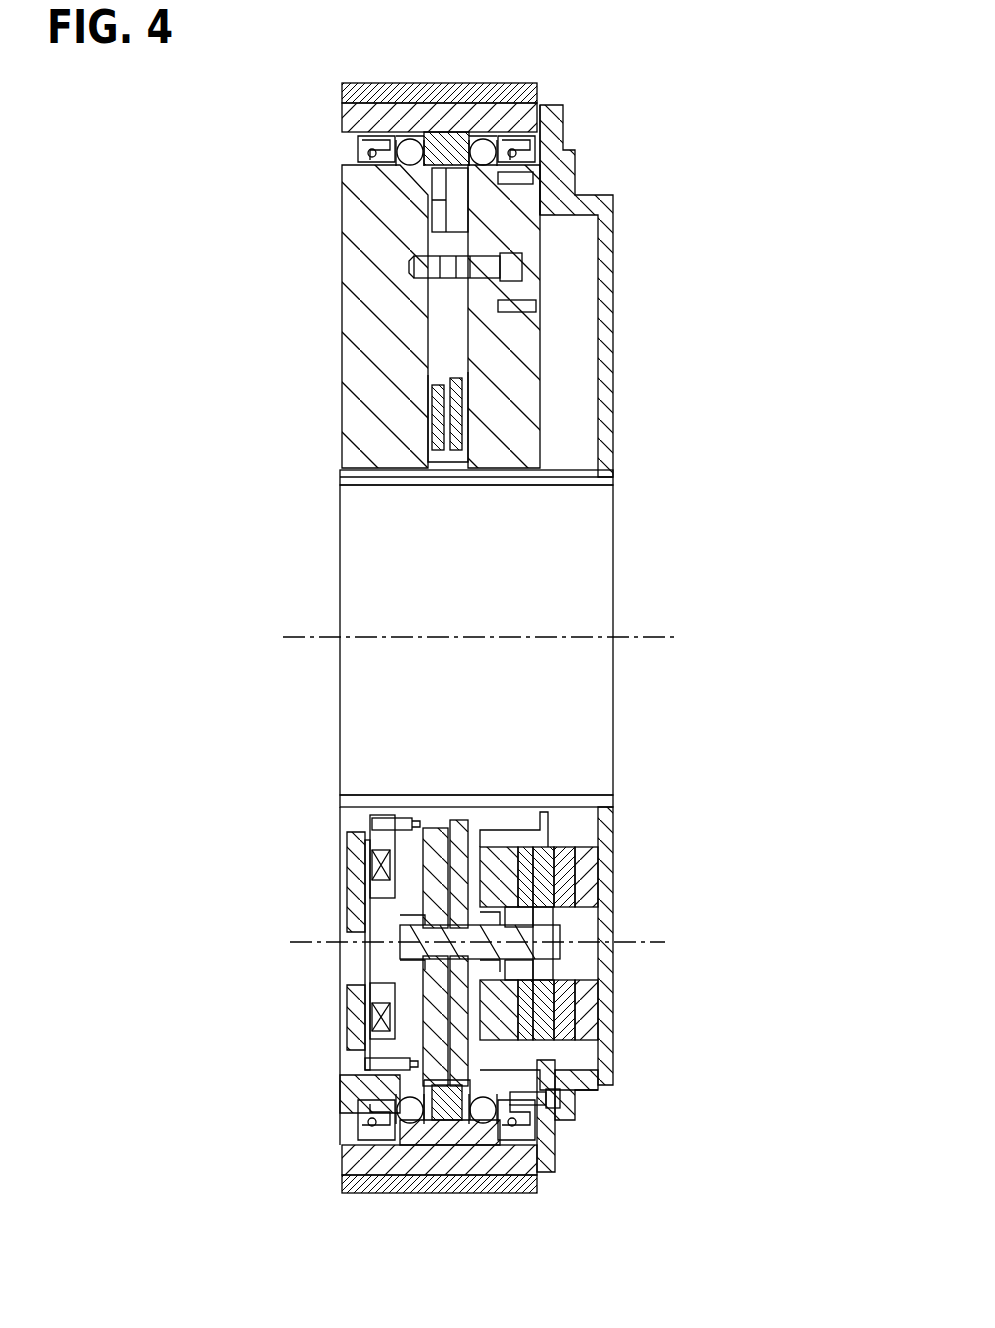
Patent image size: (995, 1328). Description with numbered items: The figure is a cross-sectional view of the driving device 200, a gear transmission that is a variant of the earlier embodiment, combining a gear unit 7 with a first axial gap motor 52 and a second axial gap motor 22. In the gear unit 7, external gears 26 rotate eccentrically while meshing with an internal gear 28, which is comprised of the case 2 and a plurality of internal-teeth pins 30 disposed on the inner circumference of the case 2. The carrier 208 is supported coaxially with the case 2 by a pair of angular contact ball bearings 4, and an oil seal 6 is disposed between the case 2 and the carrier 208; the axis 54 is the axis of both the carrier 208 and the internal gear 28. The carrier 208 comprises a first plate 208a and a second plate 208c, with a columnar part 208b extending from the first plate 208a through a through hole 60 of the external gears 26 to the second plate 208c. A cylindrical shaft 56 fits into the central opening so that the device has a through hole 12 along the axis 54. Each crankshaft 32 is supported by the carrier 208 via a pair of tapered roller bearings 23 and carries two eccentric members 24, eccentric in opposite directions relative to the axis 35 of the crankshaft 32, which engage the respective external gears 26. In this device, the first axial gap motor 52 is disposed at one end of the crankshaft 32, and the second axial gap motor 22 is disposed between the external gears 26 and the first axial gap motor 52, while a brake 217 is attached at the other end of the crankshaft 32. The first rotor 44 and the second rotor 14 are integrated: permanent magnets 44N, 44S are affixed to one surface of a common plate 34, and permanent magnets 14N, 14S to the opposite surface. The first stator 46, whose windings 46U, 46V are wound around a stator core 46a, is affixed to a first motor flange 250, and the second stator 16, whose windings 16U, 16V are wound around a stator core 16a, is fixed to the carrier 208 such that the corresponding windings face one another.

The case 2 is at (450, 100).
The angular contact ball bearings 4 is at (410, 140).
The oil seal 6 is at (370, 140).
The gear unit 7 is at (314, 124).
The through hole 12 is at (305, 518).
The second rotor 14 is at (329, 953).
The permanent magnets 14N is at (423, 905).
The permanent magnets 14S is at (423, 1050).
The second stator 16 is at (272, 926).
The winding 16U is at (340, 818).
The stator core 16a is at (345, 862).
The winding 16V is at (345, 1006).
The second axial gap motor 22 is at (556, 1112).
The bearings 23 is at (420, 944).
The eccentric members 24 is at (420, 952).
The external gears 26 is at (395, 1140).
The internal gear 28 is at (455, 1140).
The internal-teeth pins 30 is at (465, 1145).
The crankshaft 32 is at (590, 930).
The plate 34 is at (540, 1100).
The axis 35 is at (680, 942).
The first rotor 44 is at (632, 945).
The permanent magnets 44N is at (590, 870).
The permanent magnets 44S is at (590, 1020).
The first stator 46 is at (635, 925).
The winding 46U is at (610, 848).
The stator core 46a is at (612, 890).
The winding 46V is at (612, 1000).
The first axial gap motor 52 is at (584, 1092).
The axis 54 is at (672, 635).
The cylindrical shaft 56 is at (612, 477).
The through hole 60 is at (456, 378).
The driving device 200 is at (638, 88).
The carrier 208 is at (457, 625).
The first plate 208a is at (388, 208).
The columnar part 208b is at (420, 246).
The second plate 208c is at (500, 215).
The brake 217 is at (340, 848).
The first motor flange 250 is at (608, 802).